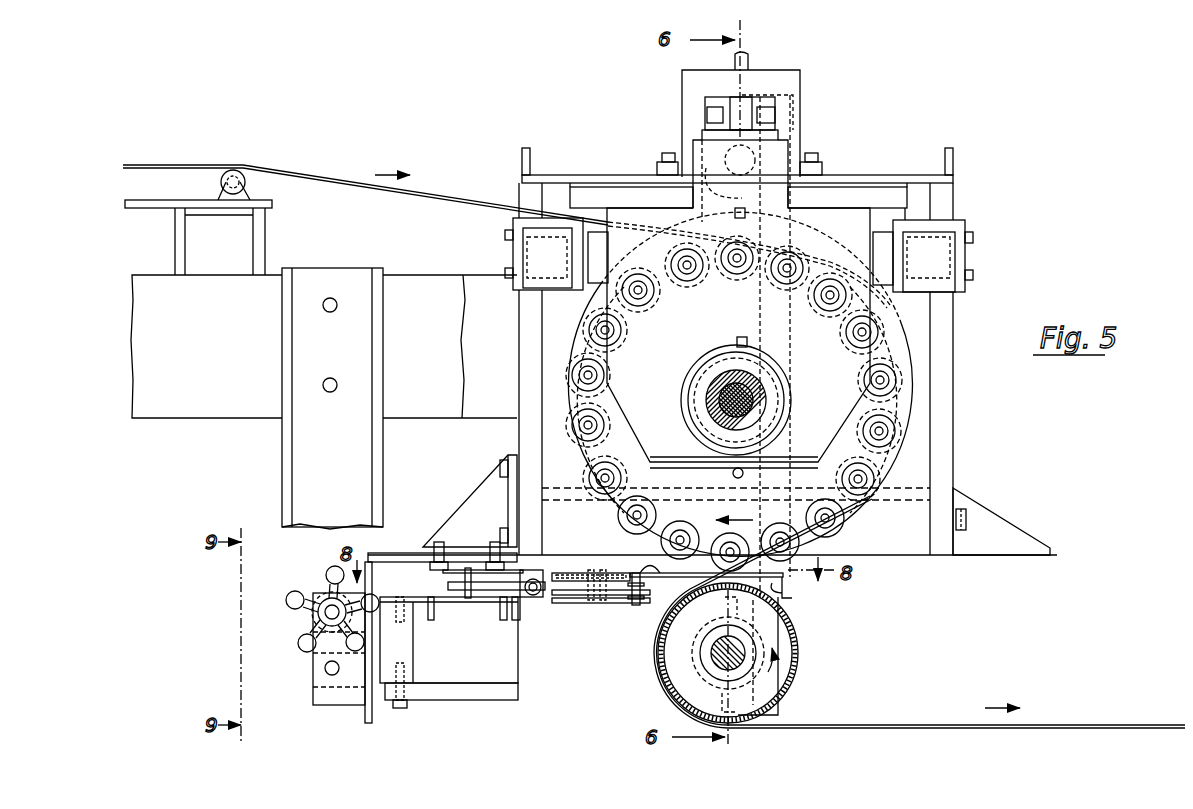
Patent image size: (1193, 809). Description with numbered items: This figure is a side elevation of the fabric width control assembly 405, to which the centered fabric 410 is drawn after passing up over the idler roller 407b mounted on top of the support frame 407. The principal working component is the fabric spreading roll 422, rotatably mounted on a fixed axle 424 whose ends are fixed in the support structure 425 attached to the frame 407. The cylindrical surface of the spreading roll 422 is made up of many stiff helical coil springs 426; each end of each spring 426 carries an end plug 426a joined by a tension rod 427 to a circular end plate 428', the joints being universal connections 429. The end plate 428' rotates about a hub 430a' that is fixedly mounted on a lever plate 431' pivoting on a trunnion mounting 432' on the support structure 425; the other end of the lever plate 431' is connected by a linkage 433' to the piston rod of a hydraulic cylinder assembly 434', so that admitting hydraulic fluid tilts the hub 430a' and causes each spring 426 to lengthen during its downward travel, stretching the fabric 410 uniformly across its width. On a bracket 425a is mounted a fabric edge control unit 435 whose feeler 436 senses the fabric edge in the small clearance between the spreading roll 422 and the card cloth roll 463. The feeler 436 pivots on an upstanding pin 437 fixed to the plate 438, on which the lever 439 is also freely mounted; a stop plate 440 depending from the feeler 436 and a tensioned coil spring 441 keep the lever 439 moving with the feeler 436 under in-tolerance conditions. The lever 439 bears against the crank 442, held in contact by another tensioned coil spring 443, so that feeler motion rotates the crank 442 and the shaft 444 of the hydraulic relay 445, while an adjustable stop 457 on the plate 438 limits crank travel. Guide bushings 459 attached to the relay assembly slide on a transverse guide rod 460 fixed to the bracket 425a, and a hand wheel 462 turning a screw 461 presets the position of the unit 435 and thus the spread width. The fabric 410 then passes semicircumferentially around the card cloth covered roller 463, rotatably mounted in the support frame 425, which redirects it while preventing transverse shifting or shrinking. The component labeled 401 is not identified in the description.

The support pedestal 401 is at (179, 248).
The fabric width control assembly 405 is at (963, 313).
The support frame 407 is at (295, 480).
The idler roller 407b is at (262, 152).
The fabric 410 is at (340, 184).
The fabric spreading roll 422 is at (823, 476).
The fixed axle 424 is at (745, 411).
The support structure 425 is at (588, 177).
The bracket 425a is at (402, 550).
The helical coil spring 426 is at (620, 522).
The end plug 426a is at (628, 523).
The tension rod 427 is at (665, 542).
The circular end plate 428' is at (684, 368).
The universal connection 429 is at (597, 484).
The hub 430a' is at (767, 411).
The lever plate 431' is at (749, 347).
The trunnion mounting 432' is at (738, 255).
The linkage 433' is at (783, 94).
The hydraulic cylinder assembly 434' is at (760, 98).
The fabric edge control unit 435 is at (571, 652).
The feeler 436 is at (788, 596).
The upstanding pin 437 is at (641, 579).
The plate 438 is at (646, 575).
The lever 439 is at (648, 606).
The stop plate 440 is at (603, 601).
The tensioned coil spring 441 is at (590, 592).
The crank 442 is at (500, 608).
The tensioned coil spring 443 is at (514, 612).
The shaft 444 is at (455, 583).
The hydraulic relay 445 is at (472, 673).
The stop 457 is at (533, 598).
The guide bushing 459 is at (355, 685).
The transverse guide rod 460 is at (325, 670).
The screw 461 is at (325, 615).
The hand wheel 462 is at (328, 577).
The card cloth roll 463 is at (813, 648).